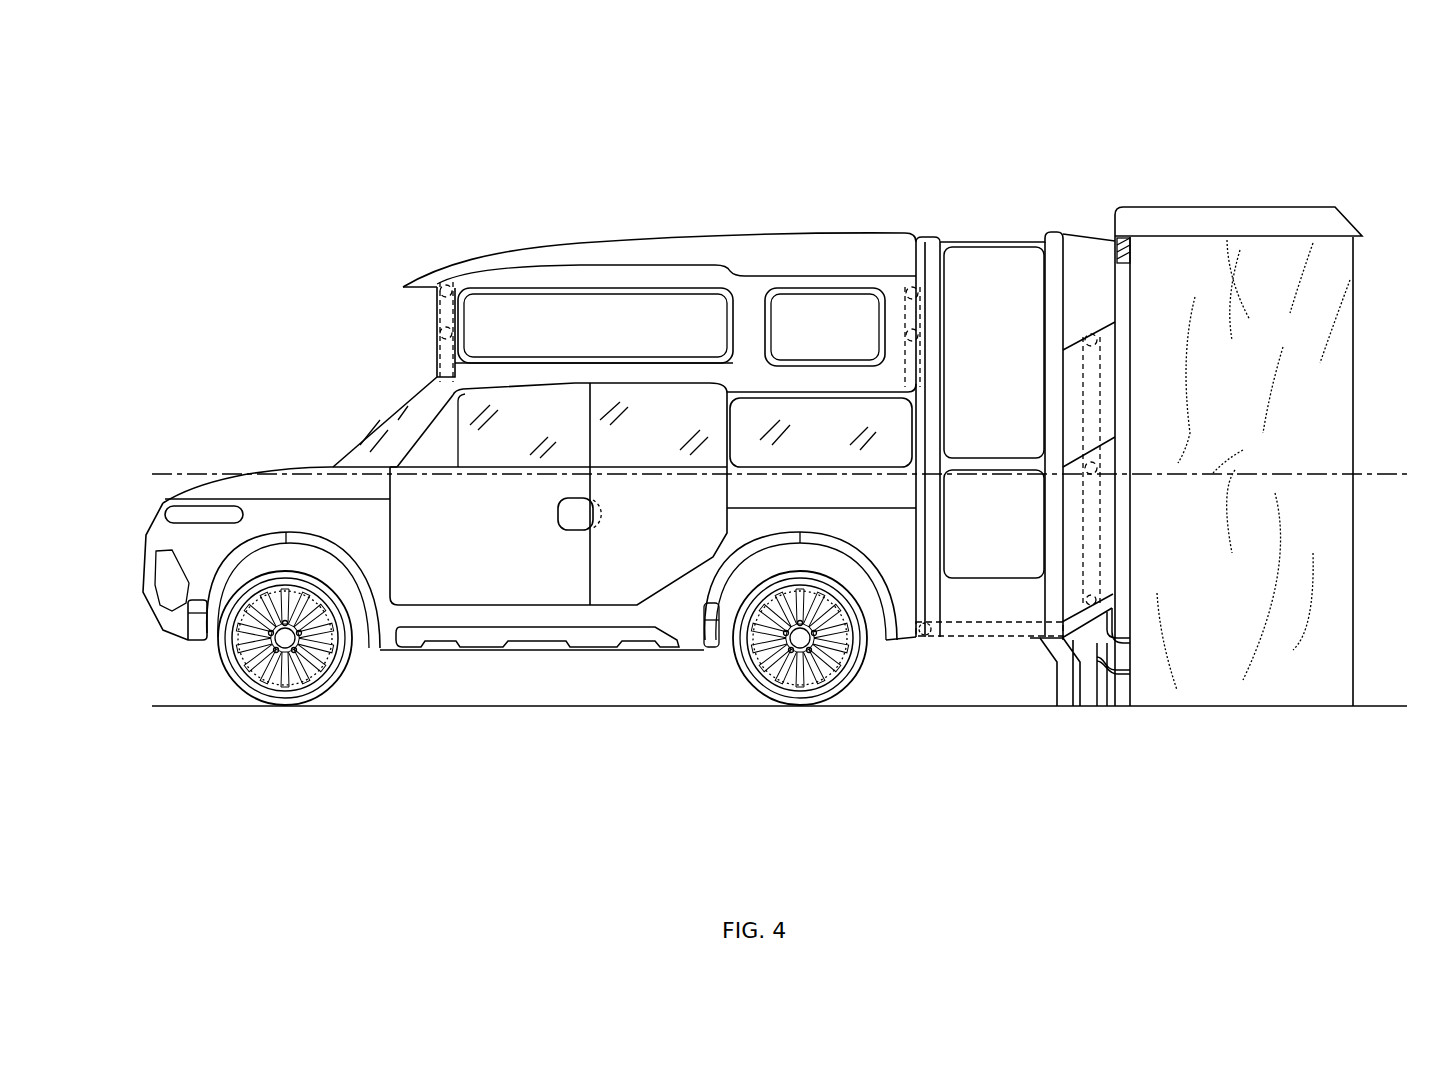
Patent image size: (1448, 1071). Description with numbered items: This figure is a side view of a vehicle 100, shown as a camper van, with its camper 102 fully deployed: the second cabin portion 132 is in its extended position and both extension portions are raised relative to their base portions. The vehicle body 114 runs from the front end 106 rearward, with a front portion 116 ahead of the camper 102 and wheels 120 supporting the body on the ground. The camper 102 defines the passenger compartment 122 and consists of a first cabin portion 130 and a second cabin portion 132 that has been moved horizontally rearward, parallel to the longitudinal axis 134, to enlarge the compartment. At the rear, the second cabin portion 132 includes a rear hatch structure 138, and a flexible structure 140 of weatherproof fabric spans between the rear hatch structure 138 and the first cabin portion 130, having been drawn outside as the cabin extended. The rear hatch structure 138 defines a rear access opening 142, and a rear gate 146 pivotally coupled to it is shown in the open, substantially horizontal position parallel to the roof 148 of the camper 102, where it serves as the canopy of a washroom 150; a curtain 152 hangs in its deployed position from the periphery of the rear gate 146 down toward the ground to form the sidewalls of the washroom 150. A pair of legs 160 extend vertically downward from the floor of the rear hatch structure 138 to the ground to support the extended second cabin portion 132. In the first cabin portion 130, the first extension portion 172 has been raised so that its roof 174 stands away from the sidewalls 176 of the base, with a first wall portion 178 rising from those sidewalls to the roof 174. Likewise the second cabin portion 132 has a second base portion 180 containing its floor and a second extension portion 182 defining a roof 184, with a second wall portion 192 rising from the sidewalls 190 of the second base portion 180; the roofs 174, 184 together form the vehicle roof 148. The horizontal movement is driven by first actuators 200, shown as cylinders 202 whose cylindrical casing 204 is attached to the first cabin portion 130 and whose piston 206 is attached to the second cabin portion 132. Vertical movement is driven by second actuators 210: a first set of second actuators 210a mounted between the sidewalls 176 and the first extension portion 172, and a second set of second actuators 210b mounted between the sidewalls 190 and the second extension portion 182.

The vehicle 100 is at (1046, 90).
The camper 102 is at (790, 229).
The front end 106 is at (150, 531).
The vehicle body 114 is at (405, 636).
The front portion 116 is at (237, 500).
The wheels 120 is at (289, 688).
The passenger compartment 122 is at (388, 436).
The first cabin portion 130 is at (659, 272).
The second cabin portion 132 is at (1001, 430).
The longitudinal axis 134 is at (1400, 478).
The rear hatch structure 138 is at (1102, 645).
The flexible structure 140 is at (921, 640).
The rear access opening 142 is at (1124, 285).
The rear gate 146 is at (1277, 421).
The roof 148 is at (845, 232).
The washroom 150 is at (1358, 617).
The curtain 152 is at (1292, 660).
The legs 160 is at (1105, 708).
The first extension portion 172 is at (522, 246).
The roof 174 is at (602, 232).
The sidewalls 176 is at (793, 413).
The first wall portion 178 is at (481, 291).
The second base portion 180 is at (998, 590).
The second extension portion 182 is at (1030, 250).
The roof 184 is at (980, 243).
The sidewalls 190 is at (1063, 642).
The second wall portion 192 is at (1120, 385).
The first actuators 200 is at (934, 729).
The cylinders 202 is at (957, 637).
The cylindrical casing 204 is at (923, 640).
The piston 206 is at (1062, 622).
The second actuators 210 is at (445, 333).
The first set of second actuators 210a is at (445, 310).
The second set of second actuators 210b is at (1100, 518).